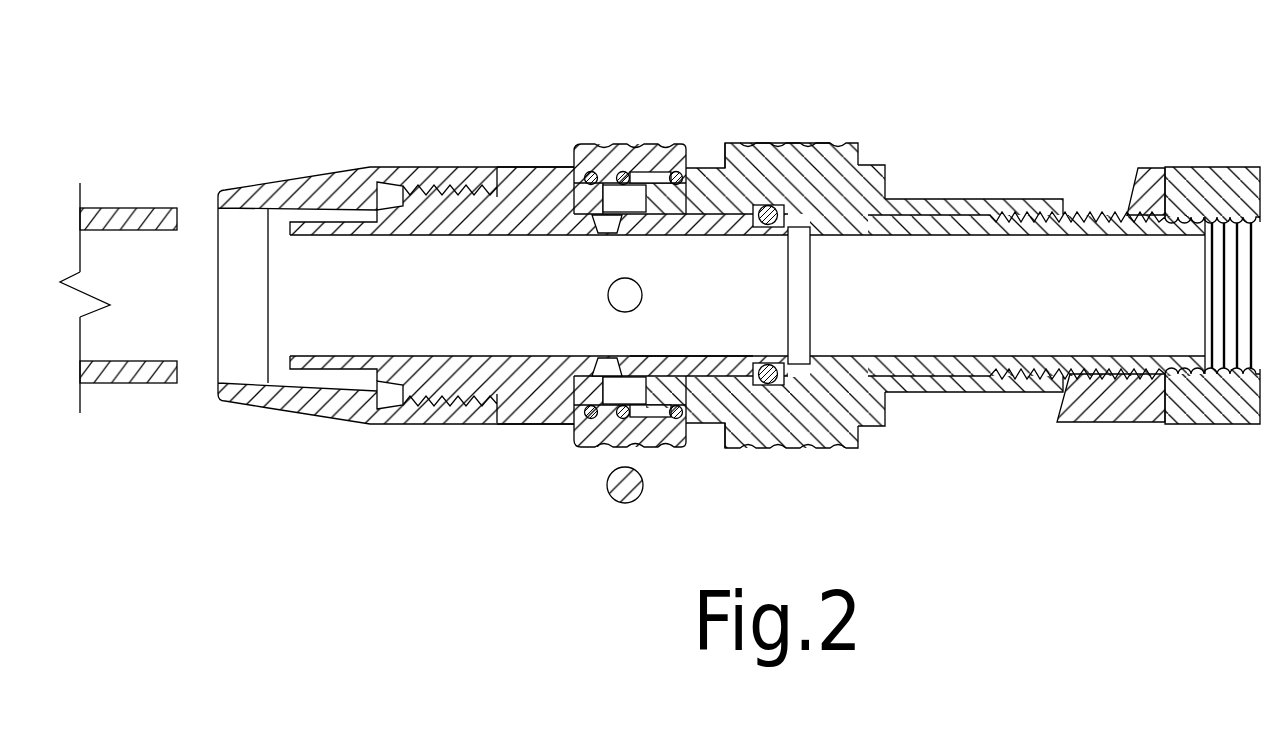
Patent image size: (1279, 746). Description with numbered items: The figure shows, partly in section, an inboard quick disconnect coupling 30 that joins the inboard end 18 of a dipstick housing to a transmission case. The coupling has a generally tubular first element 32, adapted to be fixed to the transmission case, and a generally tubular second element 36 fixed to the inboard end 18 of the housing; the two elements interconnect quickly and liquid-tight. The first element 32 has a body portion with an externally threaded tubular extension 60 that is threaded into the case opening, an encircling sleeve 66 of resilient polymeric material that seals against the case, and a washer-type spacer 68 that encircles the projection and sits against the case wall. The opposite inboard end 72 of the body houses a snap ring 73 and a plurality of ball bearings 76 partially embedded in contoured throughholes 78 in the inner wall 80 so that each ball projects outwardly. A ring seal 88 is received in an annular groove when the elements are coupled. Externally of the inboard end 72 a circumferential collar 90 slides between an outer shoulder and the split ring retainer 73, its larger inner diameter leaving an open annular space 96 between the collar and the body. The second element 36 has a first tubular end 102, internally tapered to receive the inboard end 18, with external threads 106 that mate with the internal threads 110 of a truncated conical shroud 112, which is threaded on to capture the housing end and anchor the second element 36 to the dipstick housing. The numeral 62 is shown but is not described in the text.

The inboard end of the housing 18 is at (162, 207).
The inboard quick disconnect coupling 30 is at (760, 106).
The first element 32 is at (833, 129).
The second element 36 is at (505, 167).
The externally threaded tubular extension 60 is at (1032, 224).
The shoulder 62 is at (875, 206).
The encircling sleeve 66 is at (1007, 213).
The washer-type spacer 68 is at (1153, 190).
The inboard end of the body portion 72 is at (722, 202).
The snap ring 73 is at (555, 425).
The ball bearings 76 is at (613, 497).
The throughholes 78 is at (612, 283).
The inner wall of the body portion 80 is at (655, 350).
The ring seal 88 is at (762, 384).
The circumferential collar 90 is at (607, 146).
The open annular space 96 is at (627, 147).
The first tubular end 102 is at (353, 222).
The external threads 106 is at (420, 405).
The internal threads 110 is at (477, 407).
The truncated conical shroud 112 is at (285, 393).